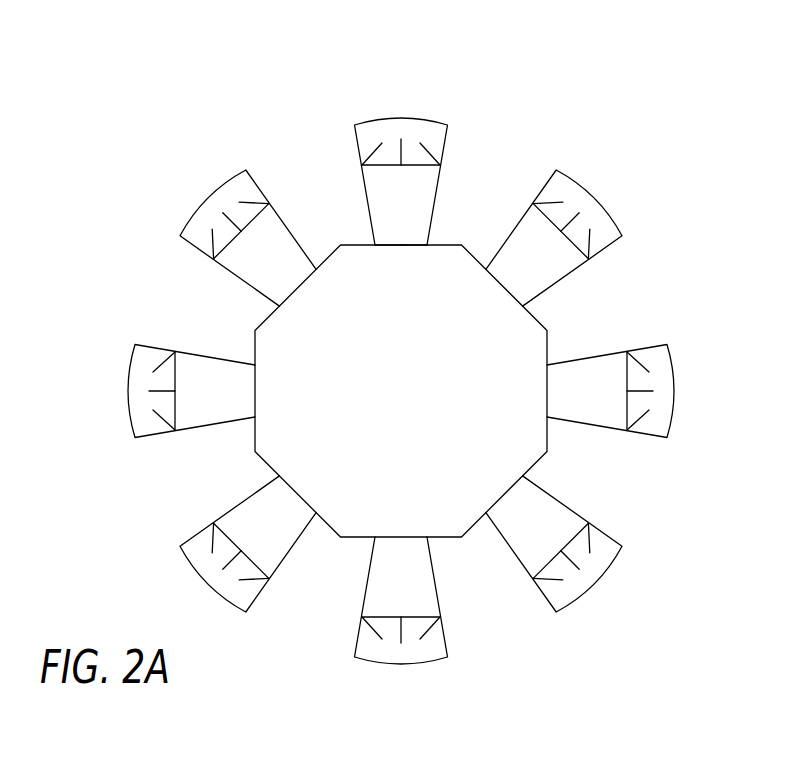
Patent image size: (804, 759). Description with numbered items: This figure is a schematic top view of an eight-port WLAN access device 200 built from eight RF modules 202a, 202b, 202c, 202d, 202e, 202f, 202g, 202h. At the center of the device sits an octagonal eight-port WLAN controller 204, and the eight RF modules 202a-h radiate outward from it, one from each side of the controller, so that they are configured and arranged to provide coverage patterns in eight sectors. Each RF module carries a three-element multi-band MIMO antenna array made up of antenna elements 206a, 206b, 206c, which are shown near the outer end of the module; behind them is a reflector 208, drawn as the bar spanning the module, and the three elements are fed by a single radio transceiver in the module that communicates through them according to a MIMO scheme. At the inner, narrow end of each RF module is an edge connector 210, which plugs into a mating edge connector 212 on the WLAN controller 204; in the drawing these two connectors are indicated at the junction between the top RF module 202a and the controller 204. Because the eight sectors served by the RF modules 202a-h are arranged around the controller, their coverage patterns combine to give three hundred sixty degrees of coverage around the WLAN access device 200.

The WLAN access device 200 is at (462, 105).
The RF module 202a is at (423, 211).
The RF module 202b is at (548, 269).
The RF module 202c is at (604, 406).
The RF module 202d is at (563, 539).
The RF module 202e is at (424, 595).
The RF module 202f is at (291, 539).
The RF module 202g is at (239, 406).
The RF module 202h is at (290, 269).
The WLAN controller 204 is at (418, 408).
The antenna element 206a is at (378, 153).
The antenna element 206b is at (401, 153).
The antenna element 206c is at (430, 152).
The reflector 208 is at (383, 167).
The edge connector 210 is at (418, 247).
The mating edge connector 212 is at (408, 247).